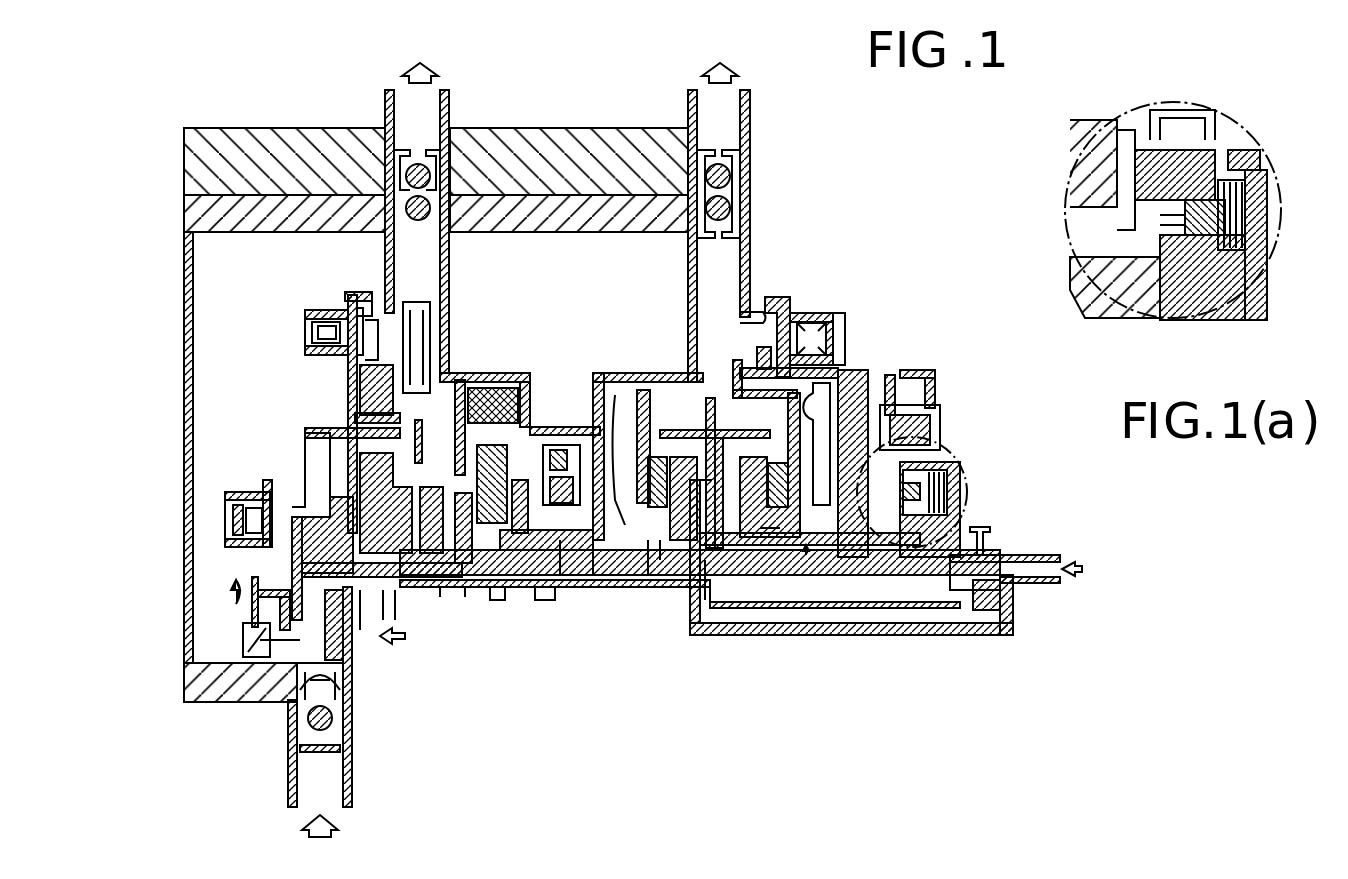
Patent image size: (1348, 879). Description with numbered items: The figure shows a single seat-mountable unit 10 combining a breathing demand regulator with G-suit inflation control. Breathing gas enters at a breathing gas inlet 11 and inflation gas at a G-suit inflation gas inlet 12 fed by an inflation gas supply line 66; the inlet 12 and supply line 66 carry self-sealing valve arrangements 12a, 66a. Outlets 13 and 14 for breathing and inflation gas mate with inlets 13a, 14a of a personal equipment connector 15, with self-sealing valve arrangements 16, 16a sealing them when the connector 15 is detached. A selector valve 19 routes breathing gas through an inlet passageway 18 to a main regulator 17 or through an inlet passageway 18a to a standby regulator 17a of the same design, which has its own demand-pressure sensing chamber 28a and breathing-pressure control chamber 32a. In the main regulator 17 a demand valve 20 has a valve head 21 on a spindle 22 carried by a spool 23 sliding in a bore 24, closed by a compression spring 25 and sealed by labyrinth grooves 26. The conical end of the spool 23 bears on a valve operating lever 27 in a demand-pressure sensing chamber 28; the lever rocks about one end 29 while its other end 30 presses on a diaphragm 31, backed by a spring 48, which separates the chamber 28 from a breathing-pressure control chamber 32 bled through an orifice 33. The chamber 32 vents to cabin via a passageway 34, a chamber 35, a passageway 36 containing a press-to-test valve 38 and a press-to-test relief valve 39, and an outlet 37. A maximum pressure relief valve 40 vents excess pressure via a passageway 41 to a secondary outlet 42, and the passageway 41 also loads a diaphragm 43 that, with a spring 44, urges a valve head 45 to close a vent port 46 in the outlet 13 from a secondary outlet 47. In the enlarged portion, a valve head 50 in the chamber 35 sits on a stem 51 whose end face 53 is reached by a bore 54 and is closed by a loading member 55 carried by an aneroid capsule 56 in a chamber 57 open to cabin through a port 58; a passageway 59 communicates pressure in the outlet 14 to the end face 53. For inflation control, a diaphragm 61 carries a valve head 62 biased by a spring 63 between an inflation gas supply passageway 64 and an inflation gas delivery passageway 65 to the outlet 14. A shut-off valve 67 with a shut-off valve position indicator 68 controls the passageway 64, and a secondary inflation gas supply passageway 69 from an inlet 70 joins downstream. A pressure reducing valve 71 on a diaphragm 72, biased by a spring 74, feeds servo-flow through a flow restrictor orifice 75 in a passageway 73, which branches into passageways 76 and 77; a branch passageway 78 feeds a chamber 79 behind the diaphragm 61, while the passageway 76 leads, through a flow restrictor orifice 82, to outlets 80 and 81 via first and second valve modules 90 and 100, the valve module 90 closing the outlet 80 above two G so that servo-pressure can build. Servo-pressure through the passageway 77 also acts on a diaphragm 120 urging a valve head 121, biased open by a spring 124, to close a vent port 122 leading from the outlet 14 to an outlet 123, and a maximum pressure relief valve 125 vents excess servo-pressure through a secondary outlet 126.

In FIG. 1, the seat-mountable unit 10 is at (858, 235).
In FIG. 1, the breathing gas inlet 11 is at (1078, 569).
In FIG. 1, the G-suit inflation gas inlet 12 is at (345, 680).
In FIG. 1, the self-sealing valve arrangement 12a is at (300, 680).
In FIG. 1, the breathing gas outlet 13 is at (718, 252).
In FIG. 1, the breathing gas inlet of connector 13a is at (722, 98).
In FIG. 1, the inflation gas outlet 14 is at (365, 128).
In FIG. 1, the inflation gas inlet of connector 14a is at (408, 95).
In FIG. 1, the personal equipment connector 15 is at (310, 128).
In FIG. 1, the self-sealing valve arrangement 16 is at (425, 215).
In FIG. 1, the self-sealing valve arrangement 16a is at (425, 175).
In FIG. 1, the main regulator 17 is at (672, 585).
In FIG. 1, the standby regulator 17a is at (790, 560).
In FIG. 1, the inlet passageway 18 is at (1005, 636).
In FIG. 1, the inlet passageway 18a is at (950, 590).
In FIG. 1, the selector valve 19 is at (985, 535).
In FIG. 1, the demand valve 20 is at (708, 580).
In FIG. 1, the valve head 21 is at (612, 395).
In FIG. 1, the spindle 22 is at (680, 455).
In FIG. 1, the spool 23 is at (690, 540).
In FIG. 1, the bore 24 is at (655, 455).
In FIG. 1, the compression spring 25 is at (643, 395).
In FIG. 1, the grooves 26 is at (735, 555).
In FIG. 1, the valve operating lever 27 is at (640, 588).
In FIG. 1, the demand-pressure sensing chamber 28 is at (620, 410).
In FIG. 1, the cover flange 28a is at (800, 520).
In FIG. 1, the lever end 29 is at (680, 575).
In FIG. 1, the lever end 30 is at (612, 425).
In FIG. 1, the diaphragm 31 is at (590, 400).
In FIG. 1, the breathing-pressure control chamber 32 is at (615, 588).
In FIG. 1, the breathing pressure control chamber 32a is at (870, 575).
In FIG. 1, the orifice 33 is at (575, 588).
In FIG. 1, the passageway 34 is at (730, 560).
In FIG. 1A, the chamber 35 is at (1115, 250).
In FIG. 1, the passageway 36 is at (910, 418).
In FIG. 1, the outlet 37 is at (905, 378).
In FIG. 1, the press-to-test valve 38 is at (930, 395).
In FIG. 1A, the press-to-test relief valve 39 is at (1183, 108).
In FIG. 1, the maximum pressure relief valve 40 is at (833, 325).
In FIG. 1, the passageway 41 is at (850, 372).
In FIG. 1, the secondary outlet 42 is at (845, 335).
In FIG. 1, the diaphragm 43 is at (800, 310).
In FIG. 1, the spring 44 is at (790, 300).
In FIG. 1, the valve head 45 is at (725, 330).
In FIG. 1, the vent port 46 is at (700, 430).
In FIG. 1, the secondary outlet 47 is at (760, 315).
In FIG. 1, the spring 48 is at (498, 440).
In FIG. 1A, the valve head 50 is at (1145, 240).
In FIG. 1A, the stem 51 is at (1160, 240).
In FIG. 1A, the end face 53 is at (1195, 240).
In FIG. 1A, the bore 54 is at (1115, 210).
In FIG. 1A, the loading member 55 is at (1245, 210).
In FIG. 1A, the aneroid capsule 56 is at (1245, 235).
In FIG. 1A, the chamber 57 is at (1250, 165).
In FIG. 1A, the port 58 is at (1220, 150).
In FIG. 1, the passageway 59 is at (590, 588).
In FIG. 1, the diaphragm 61 is at (448, 597).
In FIG. 1, the valve head 62 is at (348, 420).
In FIG. 1, the spring 63 is at (360, 410).
In FIG. 1, the inflation gas supply passageway 64 is at (260, 645).
In FIG. 1, the inflation gas delivery passageway 65 is at (445, 330).
In FIG. 1, the inflation gas supply line 66 is at (288, 800).
In FIG. 1, the self-sealing valve arrangement 66a is at (345, 735).
In FIG. 1, the shut-off valve 67 is at (250, 610).
In FIG. 1, the shut-off valve position indicator 68 is at (243, 640).
In FIG. 1, the secondary inflation gas supply passageway 69 is at (345, 600).
In FIG. 1, the inlet 70 is at (390, 620).
In FIG. 1, the pressure reducing valve 71 is at (233, 505).
In FIG. 1, the diaphragm 72 is at (275, 540).
In FIG. 1, the passageway 73 is at (235, 493).
In FIG. 1, the spring 74 is at (246, 520).
In FIG. 1, the flow restrictor orifice 75 is at (320, 515).
In FIG. 1, the passageway 76 is at (410, 600).
In FIG. 1, the passageway 77 is at (357, 400).
In FIG. 1, the branch passageway 78 is at (300, 560).
In FIG. 1, the chamber 79 is at (420, 565).
In FIG. 1, the outlet 80 is at (545, 600).
In FIG. 1, the outlet 81 is at (470, 597).
In FIG. 1, the flow restrictor orifice 82 is at (497, 600).
In FIG. 1, the first valve module 90 is at (556, 440).
In FIG. 1, the second valve module 100 is at (500, 385).
In FIG. 1, the diaphragm 120 is at (345, 295).
In FIG. 1, the valve head 121 is at (345, 312).
In FIG. 1, the vent port 122 is at (400, 305).
In FIG. 1, the outlet 123 is at (365, 300).
In FIG. 1, the spring 124 is at (445, 345).
In FIG. 1, the maximum pressure relief valve 125 is at (305, 345).
In FIG. 1, the secondary outlet 126 is at (305, 330).